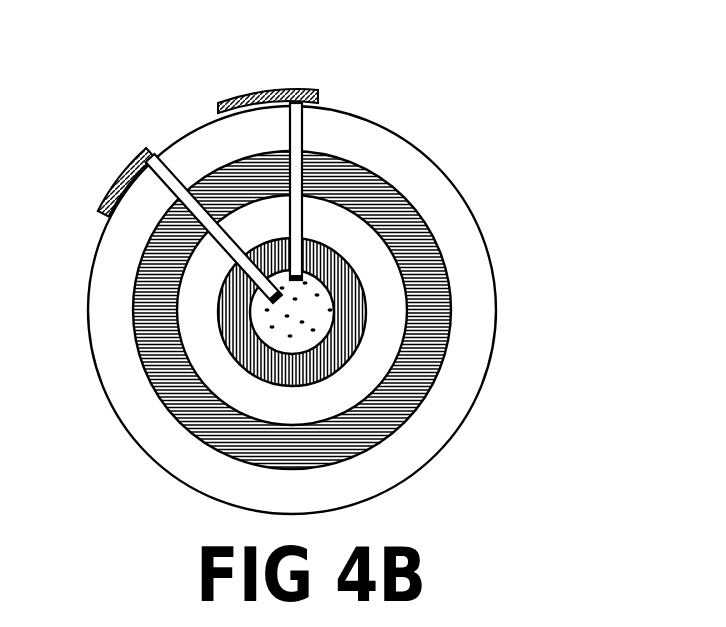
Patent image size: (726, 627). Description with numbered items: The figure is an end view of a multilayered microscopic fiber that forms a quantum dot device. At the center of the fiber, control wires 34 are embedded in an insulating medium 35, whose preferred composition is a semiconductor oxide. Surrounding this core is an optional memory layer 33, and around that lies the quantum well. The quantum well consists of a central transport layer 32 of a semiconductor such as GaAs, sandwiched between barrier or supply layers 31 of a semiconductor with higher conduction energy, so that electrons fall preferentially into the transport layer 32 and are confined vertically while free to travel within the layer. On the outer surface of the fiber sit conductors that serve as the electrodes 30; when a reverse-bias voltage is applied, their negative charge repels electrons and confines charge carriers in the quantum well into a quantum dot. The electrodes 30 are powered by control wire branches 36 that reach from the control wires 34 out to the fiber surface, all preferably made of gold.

The electrodes 30 is at (248, 100).
The barrier or supply layers 31 is at (347, 235).
The transport layer 32 is at (408, 242).
The memory layer 33 is at (353, 312).
The control wires 34 is at (310, 313).
The insulating medium 35 is at (302, 337).
The control wire branches 36 is at (243, 263).